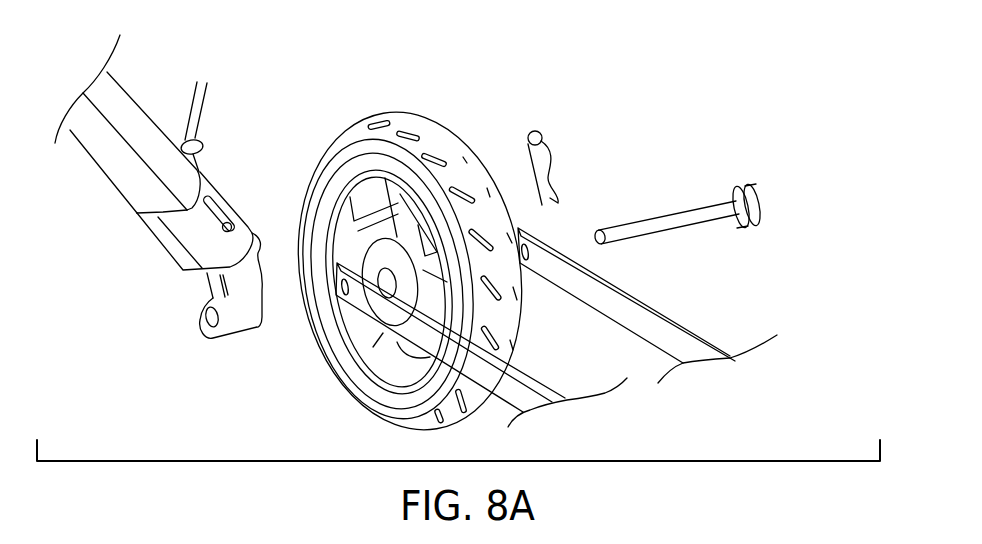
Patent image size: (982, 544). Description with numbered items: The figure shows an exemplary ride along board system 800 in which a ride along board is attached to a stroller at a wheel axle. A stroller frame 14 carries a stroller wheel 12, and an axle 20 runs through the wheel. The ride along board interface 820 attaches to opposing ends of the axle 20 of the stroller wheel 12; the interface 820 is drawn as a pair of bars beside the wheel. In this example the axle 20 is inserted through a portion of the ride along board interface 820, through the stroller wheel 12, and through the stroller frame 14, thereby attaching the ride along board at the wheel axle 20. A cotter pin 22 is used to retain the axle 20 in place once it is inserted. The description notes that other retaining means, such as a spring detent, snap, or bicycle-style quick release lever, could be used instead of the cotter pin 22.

The stroller wheel 12 is at (425, 117).
The stroller frame 14 is at (98, 147).
The axle 20 is at (682, 203).
The cotter pin 22 is at (537, 130).
The ride along board interface 820 is at (627, 323).
The ride along board system 800 is at (595, 327).